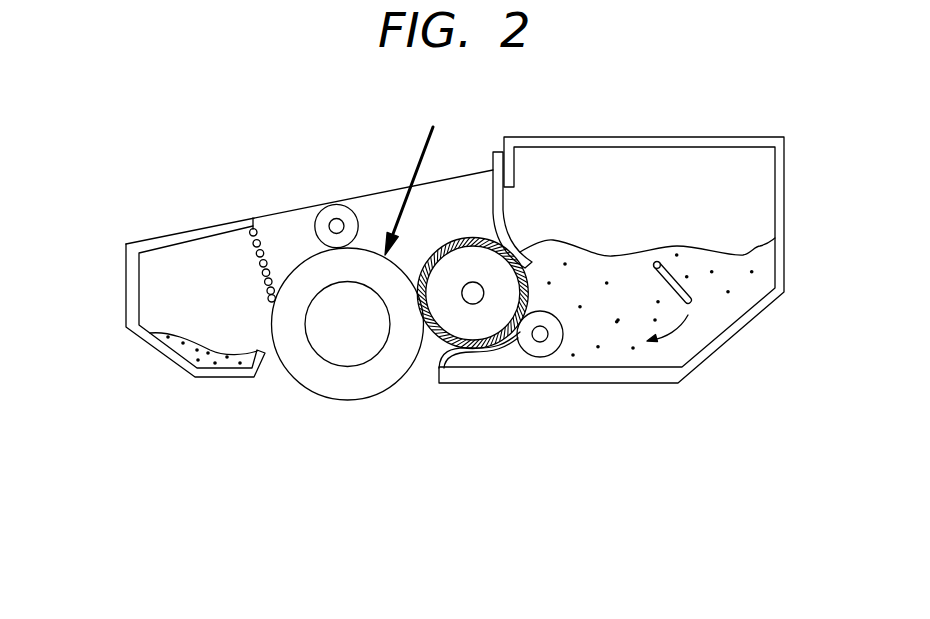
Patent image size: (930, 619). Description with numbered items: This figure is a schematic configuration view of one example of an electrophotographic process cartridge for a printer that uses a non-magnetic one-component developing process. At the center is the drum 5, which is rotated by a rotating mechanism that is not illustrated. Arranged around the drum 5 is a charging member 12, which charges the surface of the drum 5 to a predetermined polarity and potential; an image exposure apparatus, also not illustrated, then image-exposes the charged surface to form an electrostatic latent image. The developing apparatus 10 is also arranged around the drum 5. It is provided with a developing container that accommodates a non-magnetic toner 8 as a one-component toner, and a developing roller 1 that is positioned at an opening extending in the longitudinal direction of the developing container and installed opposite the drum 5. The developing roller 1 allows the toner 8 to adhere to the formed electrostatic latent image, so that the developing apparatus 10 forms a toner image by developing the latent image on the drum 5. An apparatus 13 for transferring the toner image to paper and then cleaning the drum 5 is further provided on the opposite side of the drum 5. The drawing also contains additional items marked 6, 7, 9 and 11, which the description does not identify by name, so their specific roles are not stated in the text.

The developing roller 1 is at (470, 327).
The drum 5 is at (297, 393).
The chain / charging member 6 is at (260, 272).
The toner supply roller 7 is at (535, 352).
The non-magnetic toner 8 is at (623, 268).
The regulating blade 9 is at (507, 217).
The developing apparatus 10 is at (747, 327).
The developing device 11 is at (423, 147).
The charging member 12 is at (330, 207).
The apparatus for transferring a toner image and cleaning the drum 13 is at (126, 287).